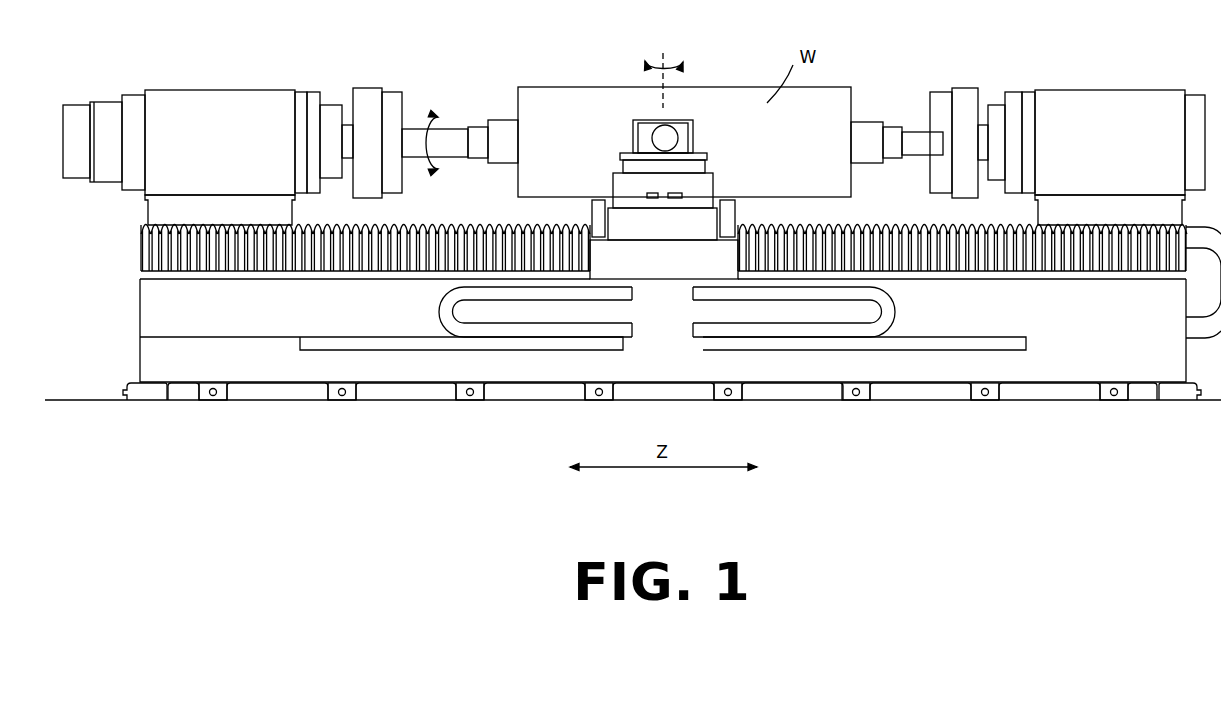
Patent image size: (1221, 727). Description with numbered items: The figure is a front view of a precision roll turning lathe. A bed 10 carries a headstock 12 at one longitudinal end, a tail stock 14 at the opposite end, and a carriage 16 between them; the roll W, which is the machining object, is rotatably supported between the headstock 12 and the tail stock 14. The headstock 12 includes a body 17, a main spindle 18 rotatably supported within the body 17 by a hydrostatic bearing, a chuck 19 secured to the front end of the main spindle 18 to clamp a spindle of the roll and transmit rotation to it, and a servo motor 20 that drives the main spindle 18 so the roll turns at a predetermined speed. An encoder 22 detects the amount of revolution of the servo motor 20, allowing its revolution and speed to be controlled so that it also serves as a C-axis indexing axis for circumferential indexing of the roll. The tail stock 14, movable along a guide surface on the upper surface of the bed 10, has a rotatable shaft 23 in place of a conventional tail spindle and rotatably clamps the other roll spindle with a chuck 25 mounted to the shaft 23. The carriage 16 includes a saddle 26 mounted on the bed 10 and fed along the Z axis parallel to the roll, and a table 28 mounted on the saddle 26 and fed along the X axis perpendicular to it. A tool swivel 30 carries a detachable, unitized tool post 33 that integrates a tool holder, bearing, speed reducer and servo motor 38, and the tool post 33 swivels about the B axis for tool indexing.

The bed 10 is at (160, 308).
The headstock 12 is at (203, 83).
The tail stock 14 is at (1106, 85).
The carriage 16 is at (726, 162).
The body 17 is at (170, 118).
The main spindle 18 is at (332, 112).
The chuck 19 is at (370, 100).
The servo motor 20 is at (110, 167).
The encoder 22 is at (75, 120).
The rotatable shaft 23 is at (993, 112).
The chuck 25 is at (965, 100).
The saddle 26 is at (667, 265).
The table 28 is at (700, 193).
The tool swivel 30 is at (628, 167).
The tool post 33 is at (685, 112).
The servo motor 38 is at (658, 138).